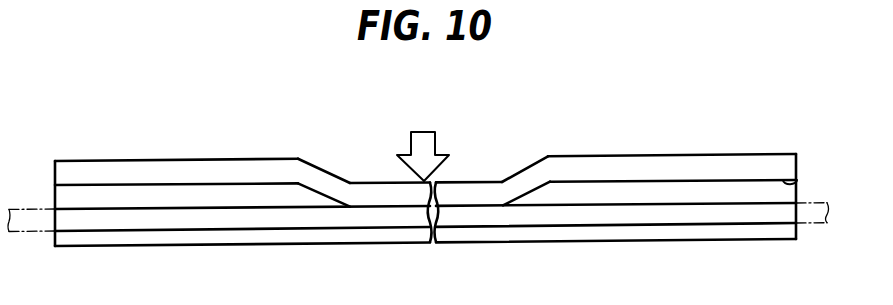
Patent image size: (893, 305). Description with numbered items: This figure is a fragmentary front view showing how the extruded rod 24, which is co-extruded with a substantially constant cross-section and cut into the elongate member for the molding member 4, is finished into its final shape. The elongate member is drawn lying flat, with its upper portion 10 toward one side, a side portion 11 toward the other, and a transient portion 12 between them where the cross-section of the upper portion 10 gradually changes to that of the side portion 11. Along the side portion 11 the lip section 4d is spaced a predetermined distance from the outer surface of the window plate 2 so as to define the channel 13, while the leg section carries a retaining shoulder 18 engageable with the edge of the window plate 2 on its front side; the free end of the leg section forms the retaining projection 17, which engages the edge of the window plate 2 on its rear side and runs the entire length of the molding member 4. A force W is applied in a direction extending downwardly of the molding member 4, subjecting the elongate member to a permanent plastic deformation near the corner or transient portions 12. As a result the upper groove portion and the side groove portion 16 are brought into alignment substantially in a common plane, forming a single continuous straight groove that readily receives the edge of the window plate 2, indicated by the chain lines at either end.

The continuous rod 24 is at (96, 160).
The side portion 11 is at (174, 159).
The retaining shoulder 18 is at (221, 193).
The channel 13 is at (272, 195).
The transient portion 12 is at (330, 173).
The upper portion 10 is at (470, 182).
The molding member 4 is at (585, 149).
The lip section 4d is at (797, 180).
The window plate 2 is at (809, 203).
The side groove portion 16 is at (330, 221).
The retaining projection 17 is at (540, 233).
The force W is at (423, 144).